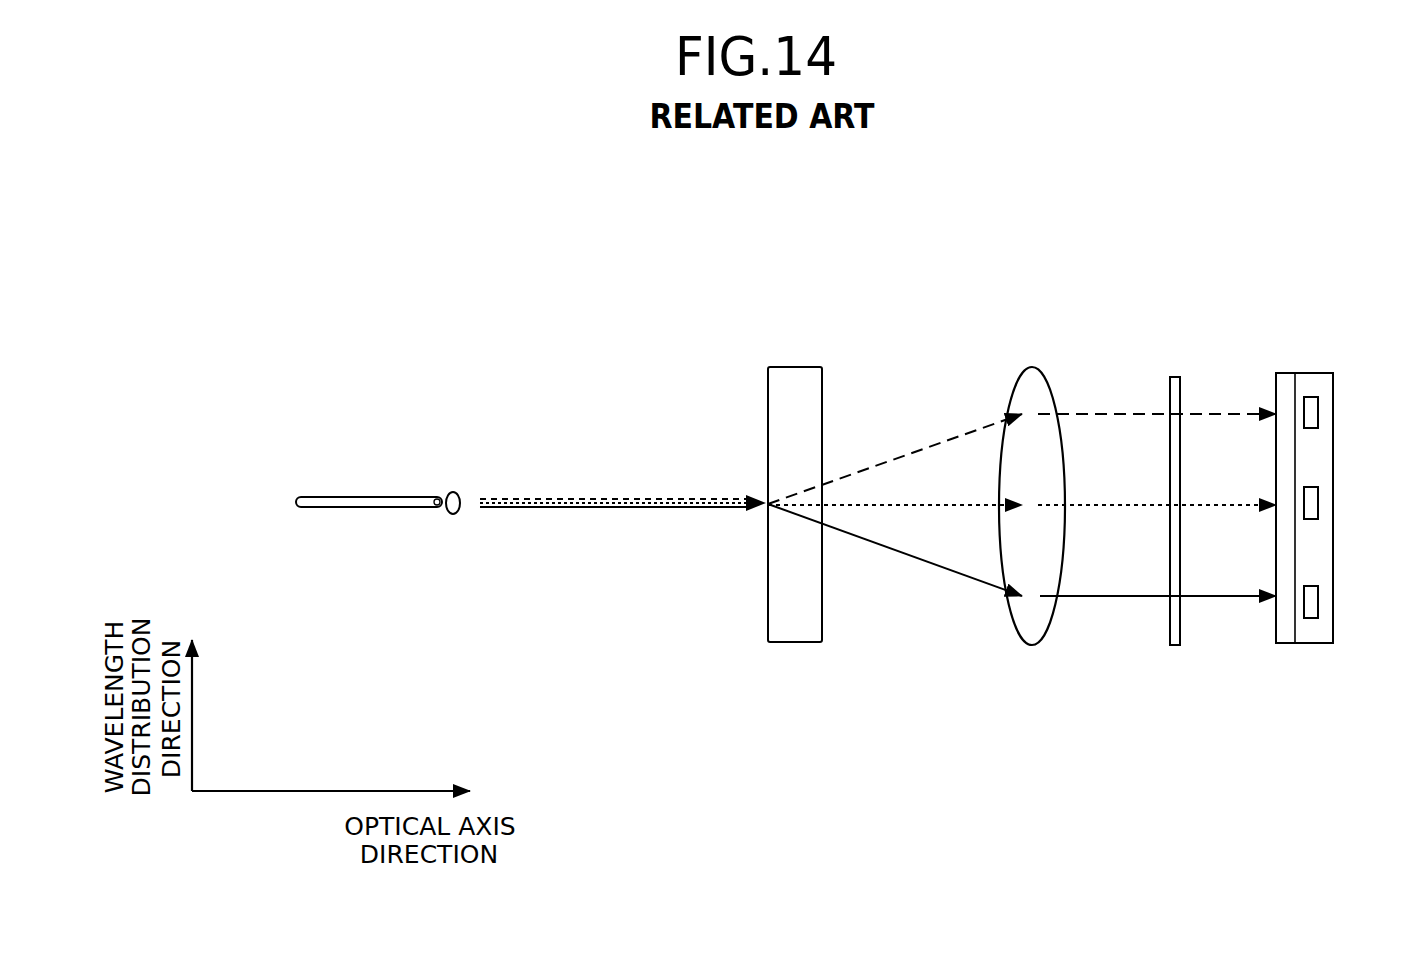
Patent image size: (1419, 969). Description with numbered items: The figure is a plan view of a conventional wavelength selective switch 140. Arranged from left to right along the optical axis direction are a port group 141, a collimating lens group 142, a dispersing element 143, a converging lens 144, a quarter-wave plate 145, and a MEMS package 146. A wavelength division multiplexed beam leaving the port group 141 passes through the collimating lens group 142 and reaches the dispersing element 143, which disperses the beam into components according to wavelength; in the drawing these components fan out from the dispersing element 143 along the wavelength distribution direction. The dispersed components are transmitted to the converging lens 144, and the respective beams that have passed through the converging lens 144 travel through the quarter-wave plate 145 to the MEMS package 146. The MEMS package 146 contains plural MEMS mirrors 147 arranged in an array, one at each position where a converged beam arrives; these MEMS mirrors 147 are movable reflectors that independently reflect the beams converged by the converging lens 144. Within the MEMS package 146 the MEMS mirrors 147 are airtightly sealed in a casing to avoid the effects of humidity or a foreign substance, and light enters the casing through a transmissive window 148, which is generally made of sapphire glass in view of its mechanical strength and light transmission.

The wavelength selective switch 140 is at (992, 296).
The port group 141 is at (362, 498).
The collimating lens group 142 is at (457, 493).
The dispersing element 143 is at (794, 366).
The converging lens 144 is at (1042, 372).
The λ/4 plate 145 is at (1175, 376).
The MEMS package 146 is at (1288, 373).
The MEMS mirror 147 is at (1318, 411).
The transmissive window 148 is at (1290, 645).